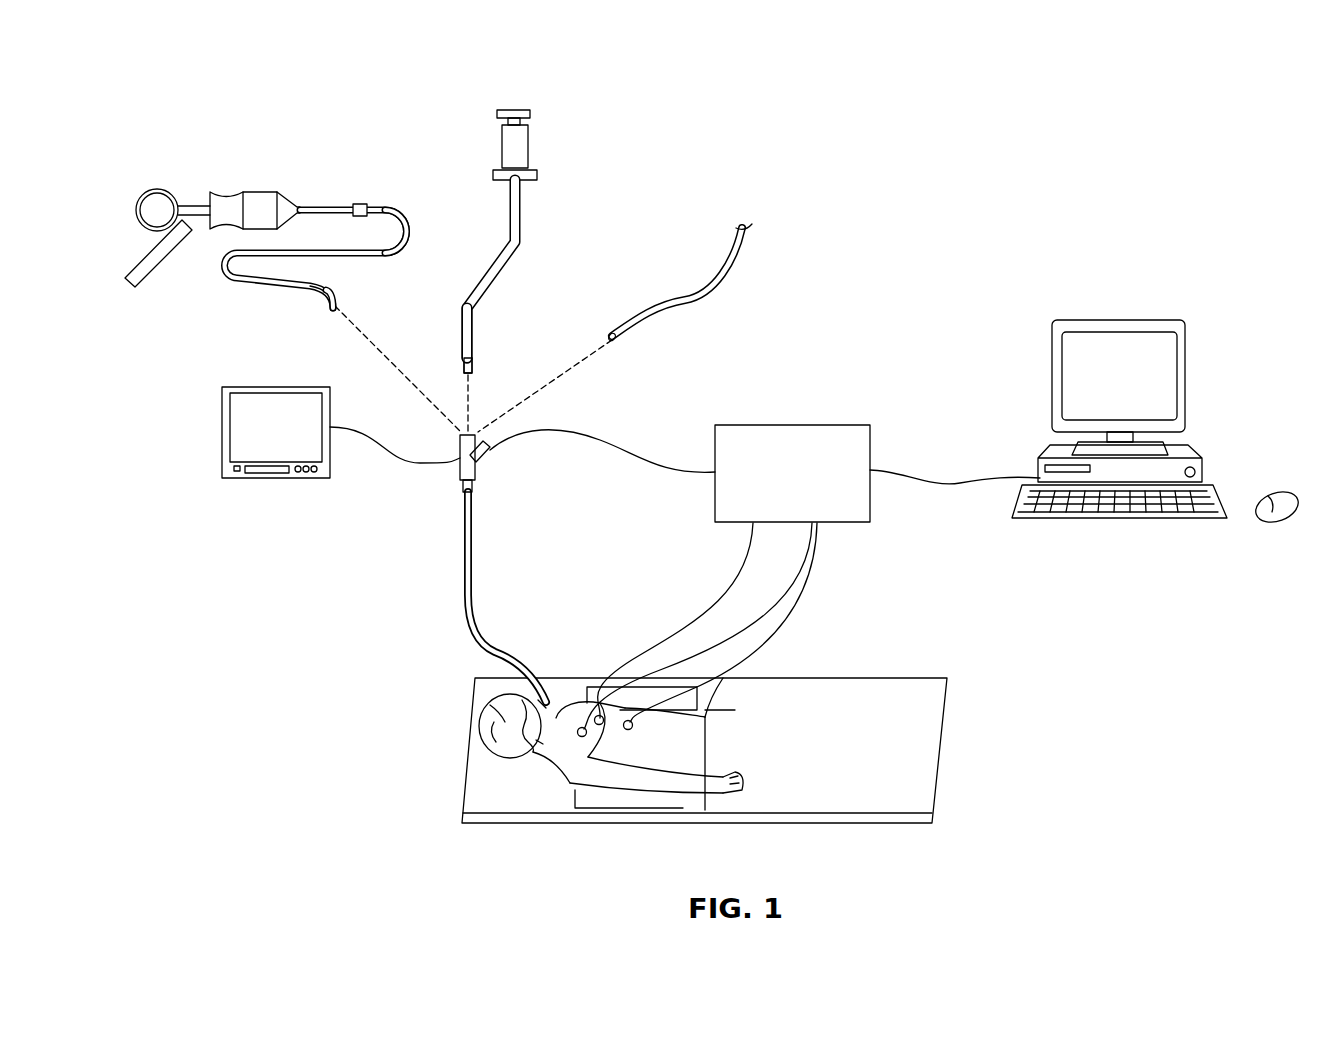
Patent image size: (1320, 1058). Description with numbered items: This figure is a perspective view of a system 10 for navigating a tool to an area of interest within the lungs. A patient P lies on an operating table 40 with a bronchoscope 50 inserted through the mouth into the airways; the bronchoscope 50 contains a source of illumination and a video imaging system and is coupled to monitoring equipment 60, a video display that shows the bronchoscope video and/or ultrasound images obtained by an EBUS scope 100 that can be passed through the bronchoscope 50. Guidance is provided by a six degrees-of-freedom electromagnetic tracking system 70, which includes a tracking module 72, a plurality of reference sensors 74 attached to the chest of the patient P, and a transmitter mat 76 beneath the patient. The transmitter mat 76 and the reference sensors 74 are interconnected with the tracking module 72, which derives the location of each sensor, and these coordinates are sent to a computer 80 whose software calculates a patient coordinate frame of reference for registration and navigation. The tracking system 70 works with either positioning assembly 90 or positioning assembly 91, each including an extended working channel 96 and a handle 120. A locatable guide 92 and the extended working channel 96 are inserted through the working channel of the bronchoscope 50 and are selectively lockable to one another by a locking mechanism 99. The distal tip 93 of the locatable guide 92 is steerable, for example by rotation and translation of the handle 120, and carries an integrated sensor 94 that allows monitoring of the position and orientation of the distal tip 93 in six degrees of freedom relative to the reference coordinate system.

The system 10 is at (1100, 213).
The operating table 40 is at (478, 783).
The bronchoscope 50 is at (462, 518).
The monitoring equipment 60 is at (220, 433).
The electromagnetic tracking system 70 is at (812, 550).
The tracking module 72 is at (808, 490).
The reference sensors 74 is at (600, 736).
The transmitter mat 76 is at (595, 802).
The computer 80 is at (1185, 375).
The positioning assembly 90 is at (279, 219).
The positioning assembly 91 is at (515, 218).
The locatable guide 92 is at (336, 203).
The distal tip 93 is at (330, 312).
The sensor 94 is at (340, 305).
The extended working channel 96 is at (408, 237).
The locking mechanism 99 is at (367, 207).
The EBUS scope 100 is at (680, 300).
The handle 120 is at (499, 151).
The patient P is at (480, 720).